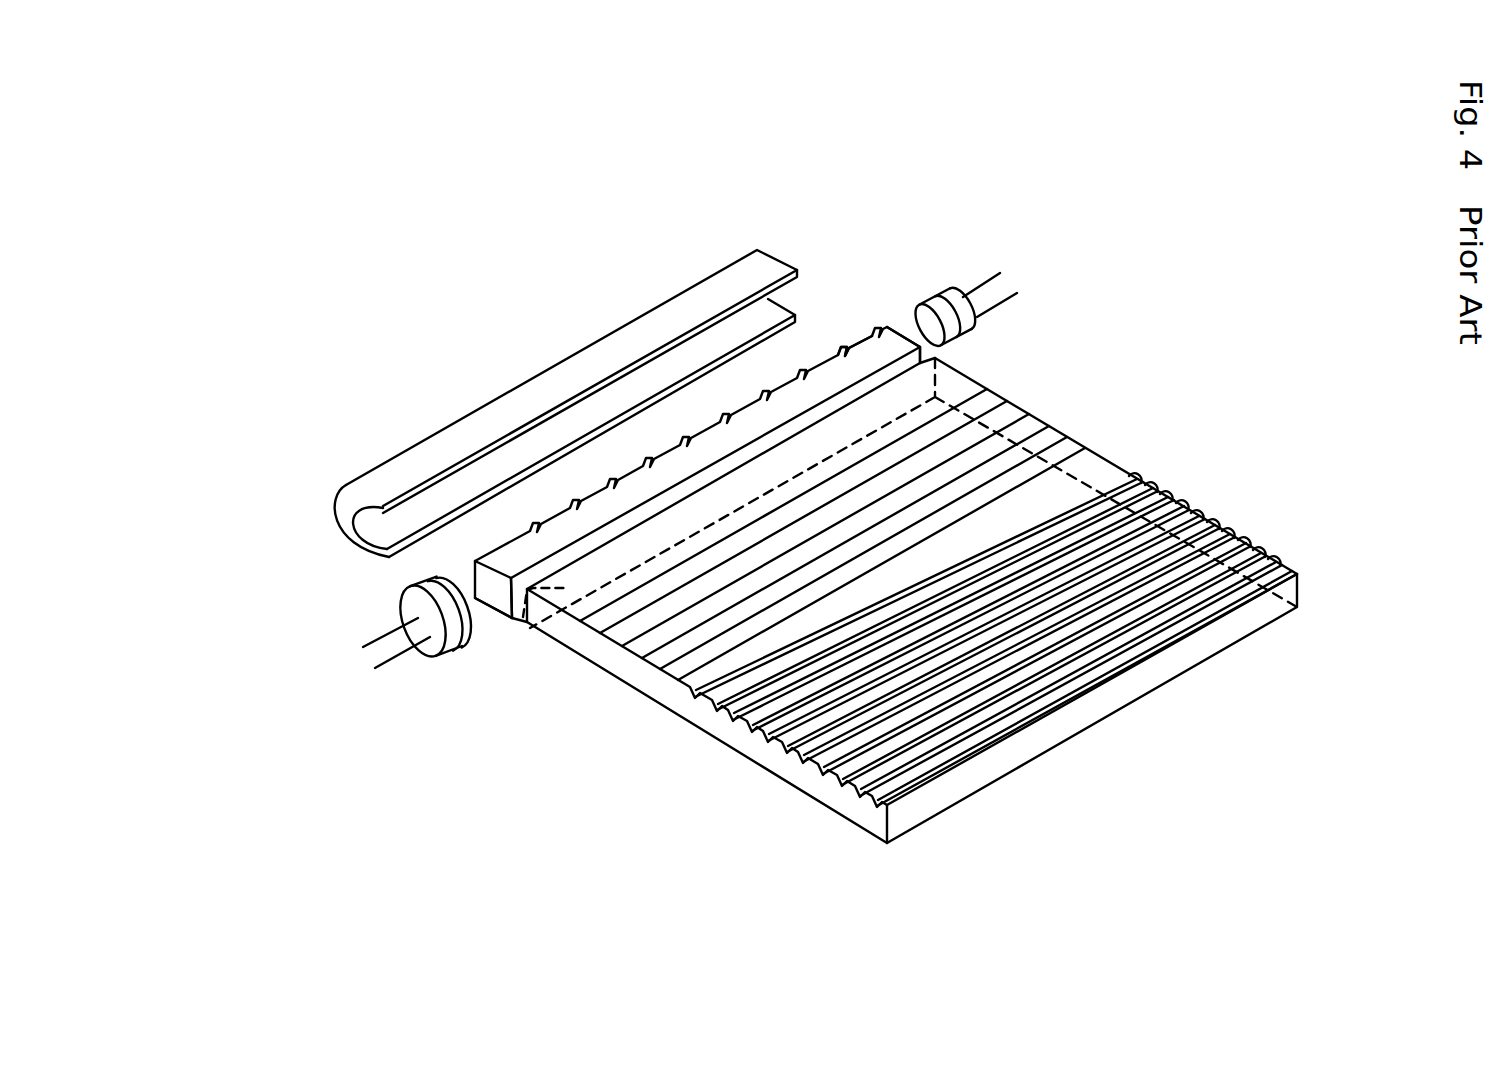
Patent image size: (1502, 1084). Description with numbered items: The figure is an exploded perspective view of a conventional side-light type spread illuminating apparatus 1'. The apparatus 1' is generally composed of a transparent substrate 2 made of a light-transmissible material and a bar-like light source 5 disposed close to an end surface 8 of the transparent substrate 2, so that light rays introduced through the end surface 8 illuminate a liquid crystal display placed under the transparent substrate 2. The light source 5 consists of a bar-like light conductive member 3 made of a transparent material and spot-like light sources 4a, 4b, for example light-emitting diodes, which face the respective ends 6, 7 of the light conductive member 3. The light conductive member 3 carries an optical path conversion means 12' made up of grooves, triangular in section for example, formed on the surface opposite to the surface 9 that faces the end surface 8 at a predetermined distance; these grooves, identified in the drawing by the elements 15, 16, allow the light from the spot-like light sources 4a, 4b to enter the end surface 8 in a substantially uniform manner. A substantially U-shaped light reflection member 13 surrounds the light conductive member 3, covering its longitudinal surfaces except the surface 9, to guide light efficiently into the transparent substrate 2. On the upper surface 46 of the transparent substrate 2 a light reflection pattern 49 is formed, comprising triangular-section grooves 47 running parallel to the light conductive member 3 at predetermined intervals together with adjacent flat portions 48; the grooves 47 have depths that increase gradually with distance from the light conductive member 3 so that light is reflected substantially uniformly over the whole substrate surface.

The spread illuminating apparatus 1' is at (748, 480).
The transparent substrate 2 is at (712, 711).
The light conductive member 3 is at (477, 561).
The spot-like light source 4a is at (420, 588).
The spot-like light source 4b is at (957, 307).
The light source 5 is at (225, 513).
The one end of the light conductive member 6 is at (486, 612).
The one end of the light conductive member 7 is at (897, 337).
The end surface 8 is at (523, 617).
The surface facing the end surface 9 is at (492, 590).
The optical path conversion means 12' is at (693, 339).
The light reflection member 13 is at (512, 385).
The V-grooves 15 is at (832, 356).
The ridges between grooves 16 is at (847, 344).
The upper surface 46 is at (1057, 497).
The grooves 47 is at (1206, 520).
The flat portions 48 is at (1226, 530).
The light reflection pattern 49 is at (1312, 362).